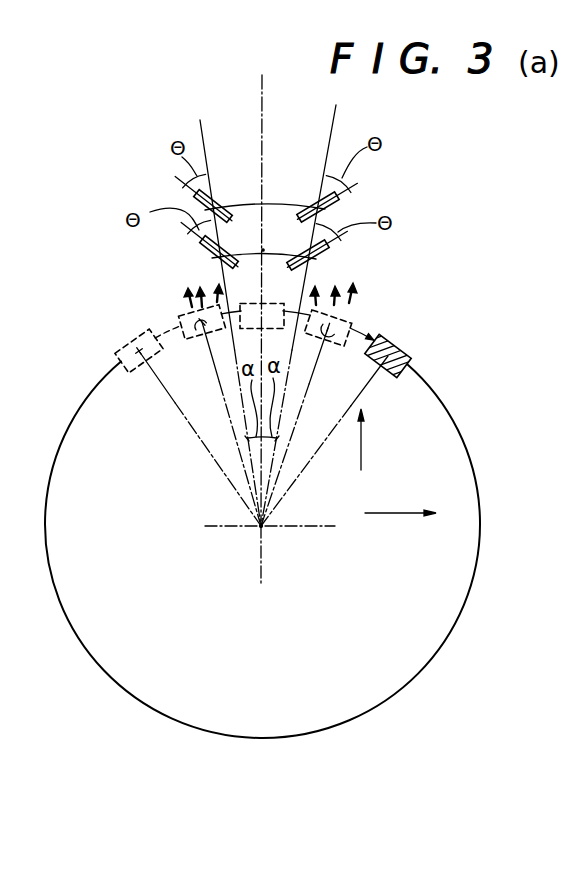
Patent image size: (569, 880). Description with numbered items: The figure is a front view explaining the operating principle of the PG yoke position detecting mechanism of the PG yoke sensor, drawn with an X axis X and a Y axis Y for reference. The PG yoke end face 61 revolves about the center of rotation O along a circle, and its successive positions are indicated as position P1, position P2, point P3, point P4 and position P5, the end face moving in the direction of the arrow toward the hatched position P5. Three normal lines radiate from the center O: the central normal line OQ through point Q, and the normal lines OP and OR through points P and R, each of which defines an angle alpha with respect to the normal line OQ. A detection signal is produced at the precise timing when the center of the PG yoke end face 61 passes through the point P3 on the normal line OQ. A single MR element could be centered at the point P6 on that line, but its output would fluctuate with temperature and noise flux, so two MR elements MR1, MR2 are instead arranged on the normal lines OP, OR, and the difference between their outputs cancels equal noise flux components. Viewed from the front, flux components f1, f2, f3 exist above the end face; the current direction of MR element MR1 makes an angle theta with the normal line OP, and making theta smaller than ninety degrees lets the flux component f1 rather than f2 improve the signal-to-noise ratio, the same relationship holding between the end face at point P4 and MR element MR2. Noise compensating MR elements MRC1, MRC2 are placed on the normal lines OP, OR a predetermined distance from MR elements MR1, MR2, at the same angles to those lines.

The position of PG yoke end face P1 is at (138, 350).
The position of PG yoke end face P2 is at (200, 323).
The point on normal line OQ P3 is at (263, 311).
The point on normal line OR P4 is at (350, 327).
The position of PG yoke end face P5 is at (400, 350).
The point on normal line OQ P6 is at (265, 250).
The PG yoke end face 61 is at (410, 362).
The noise compensating MR element MRC1 is at (194, 195).
The noise compensating MR element MRC2 is at (343, 201).
The MR element MR1 is at (200, 250).
The MR element MR2 is at (333, 250).
The flux component f1 is at (210, 286).
The flux component f2 is at (272, 290).
The flux component f3 is at (320, 287).
The normal line OP endpoint P is at (226, 311).
The normal line OQ endpoint Q is at (268, 288).
The normal line OR endpoint R is at (304, 305).
The center of rotation O is at (271, 539).
The X axis X is at (409, 518).
The Y axis Y is at (360, 429).